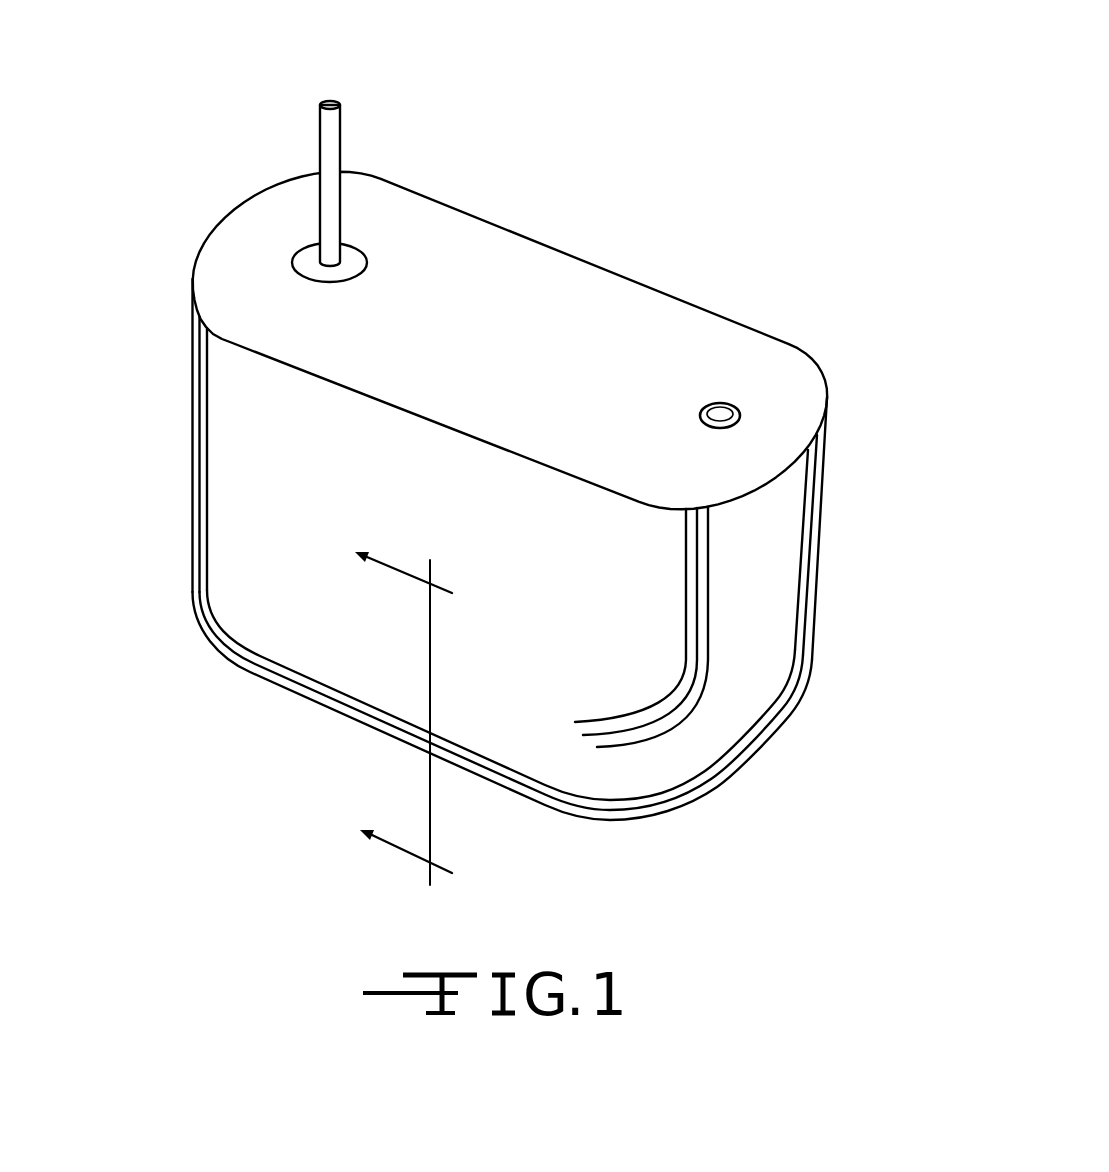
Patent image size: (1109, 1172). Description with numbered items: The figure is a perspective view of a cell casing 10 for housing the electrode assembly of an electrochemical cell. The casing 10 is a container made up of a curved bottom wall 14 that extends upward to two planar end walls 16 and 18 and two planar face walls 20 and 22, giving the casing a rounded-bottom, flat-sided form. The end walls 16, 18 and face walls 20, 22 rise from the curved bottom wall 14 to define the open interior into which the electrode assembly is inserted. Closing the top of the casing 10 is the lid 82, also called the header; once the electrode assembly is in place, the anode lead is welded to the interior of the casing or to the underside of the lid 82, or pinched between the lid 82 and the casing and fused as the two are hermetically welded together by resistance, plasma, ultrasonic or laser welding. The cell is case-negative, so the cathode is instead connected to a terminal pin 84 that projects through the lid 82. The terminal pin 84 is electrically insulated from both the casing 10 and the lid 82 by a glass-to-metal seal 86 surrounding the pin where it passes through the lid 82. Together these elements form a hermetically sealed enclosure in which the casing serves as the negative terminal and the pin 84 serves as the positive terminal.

The cell casing 10 is at (490, 453).
The curved bottom wall 14 is at (712, 792).
The planar end wall 16 is at (760, 608).
The planar end wall 18 is at (190, 490).
The planar face wall 20 is at (360, 650).
The planar face wall 22 is at (827, 463).
The lid 82 is at (583, 367).
The terminal pin 84 is at (343, 128).
The glass-to-metal seal 86 is at (367, 263).